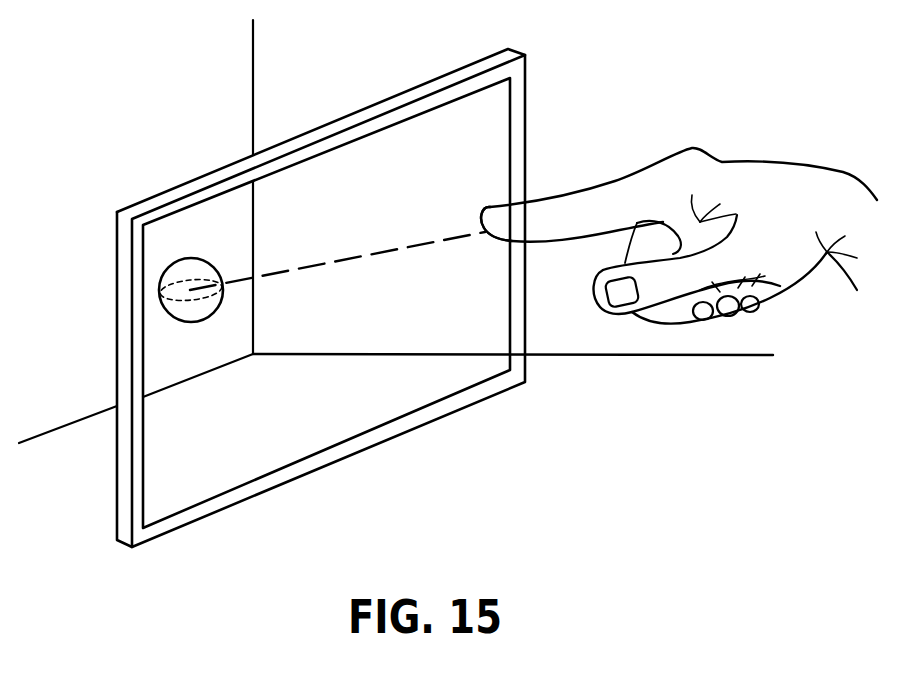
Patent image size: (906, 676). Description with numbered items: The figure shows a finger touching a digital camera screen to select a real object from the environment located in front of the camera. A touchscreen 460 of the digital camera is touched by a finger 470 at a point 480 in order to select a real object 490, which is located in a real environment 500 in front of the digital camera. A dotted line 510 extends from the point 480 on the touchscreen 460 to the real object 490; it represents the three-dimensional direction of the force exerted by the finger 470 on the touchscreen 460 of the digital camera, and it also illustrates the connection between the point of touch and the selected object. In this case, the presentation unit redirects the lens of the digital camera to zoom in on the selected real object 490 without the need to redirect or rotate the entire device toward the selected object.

The touchscreen 460 is at (170, 181).
The finger 470 is at (600, 186).
The point 480 is at (485, 240).
The real object 490 is at (207, 320).
The real environment 500 is at (630, 356).
The dotted line 510 is at (352, 258).